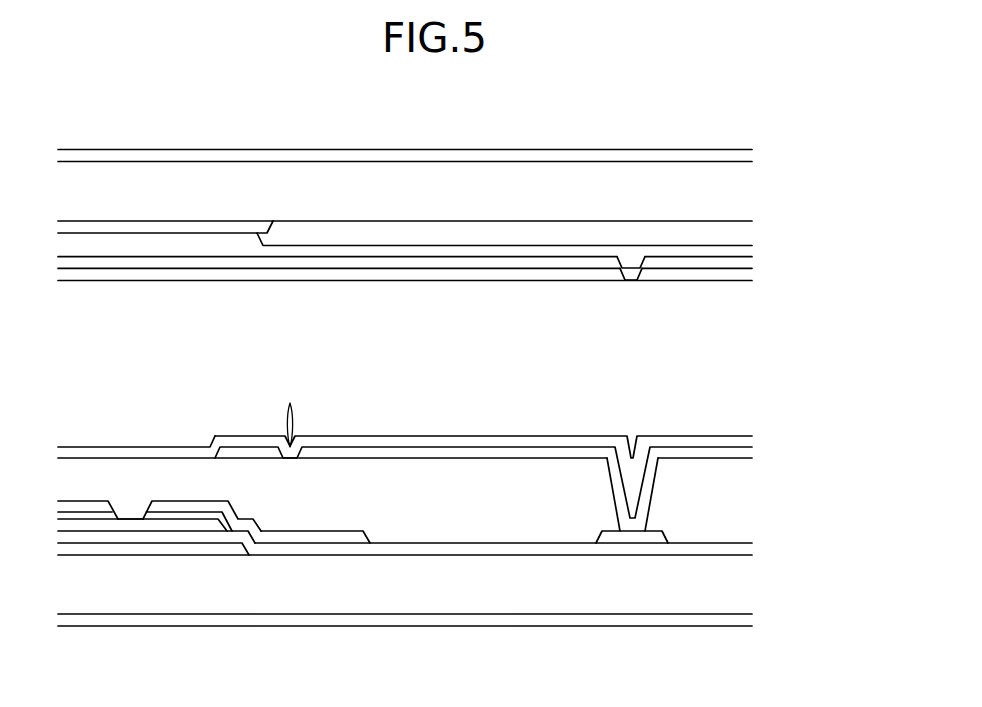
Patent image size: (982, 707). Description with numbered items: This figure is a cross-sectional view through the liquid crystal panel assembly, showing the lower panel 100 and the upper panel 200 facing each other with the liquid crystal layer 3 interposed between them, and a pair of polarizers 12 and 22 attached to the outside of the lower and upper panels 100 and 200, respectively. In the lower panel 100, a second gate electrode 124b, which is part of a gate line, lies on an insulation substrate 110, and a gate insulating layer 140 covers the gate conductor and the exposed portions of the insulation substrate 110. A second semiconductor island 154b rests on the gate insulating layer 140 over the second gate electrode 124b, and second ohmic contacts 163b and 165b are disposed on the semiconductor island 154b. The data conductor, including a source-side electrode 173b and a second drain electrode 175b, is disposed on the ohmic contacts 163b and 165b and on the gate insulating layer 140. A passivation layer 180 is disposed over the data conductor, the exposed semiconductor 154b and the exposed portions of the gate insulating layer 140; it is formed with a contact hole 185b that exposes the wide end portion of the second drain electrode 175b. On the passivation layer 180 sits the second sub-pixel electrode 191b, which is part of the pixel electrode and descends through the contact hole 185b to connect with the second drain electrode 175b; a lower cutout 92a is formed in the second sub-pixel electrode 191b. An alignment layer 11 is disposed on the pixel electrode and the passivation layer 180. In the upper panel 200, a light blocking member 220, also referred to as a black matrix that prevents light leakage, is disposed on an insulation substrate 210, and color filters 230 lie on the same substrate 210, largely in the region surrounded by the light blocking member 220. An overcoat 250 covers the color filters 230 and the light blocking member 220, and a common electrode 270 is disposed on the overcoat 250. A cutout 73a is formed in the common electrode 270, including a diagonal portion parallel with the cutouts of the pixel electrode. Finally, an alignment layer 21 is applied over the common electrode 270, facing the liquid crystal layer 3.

The polarizer 22 is at (752, 154).
The upper panel 200 is at (758, 163).
The insulation substrate 210 is at (282, 178).
The light blocking member 220 is at (187, 227).
The color filter 230 is at (353, 235).
The overcoat 250 is at (425, 250).
The common electrode 270 is at (493, 265).
The cutout 73a is at (625, 271).
The alignment layer 21 is at (552, 277).
The liquid crystal layer 3 is at (758, 282).
The alignment layer 11 is at (517, 440).
The second sub-pixel electrode 191b is at (370, 453).
The lower cutout 92a is at (291, 412).
The passivation layer 180 is at (449, 495).
The contact hole 185b is at (613, 487).
The source electrode 173b is at (87, 507).
The second drain electrode 175b is at (172, 507).
The second ohmic contact 163b is at (78, 517).
The second ohmic contact 165b is at (205, 517).
The second semiconductor island 154b is at (170, 525).
The second gate electrode 124b is at (128, 550).
The gate insulating layer 140 is at (398, 547).
The insulation substrate 110 is at (473, 597).
The polarizer 12 is at (752, 621).
The lower panel 100 is at (758, 438).